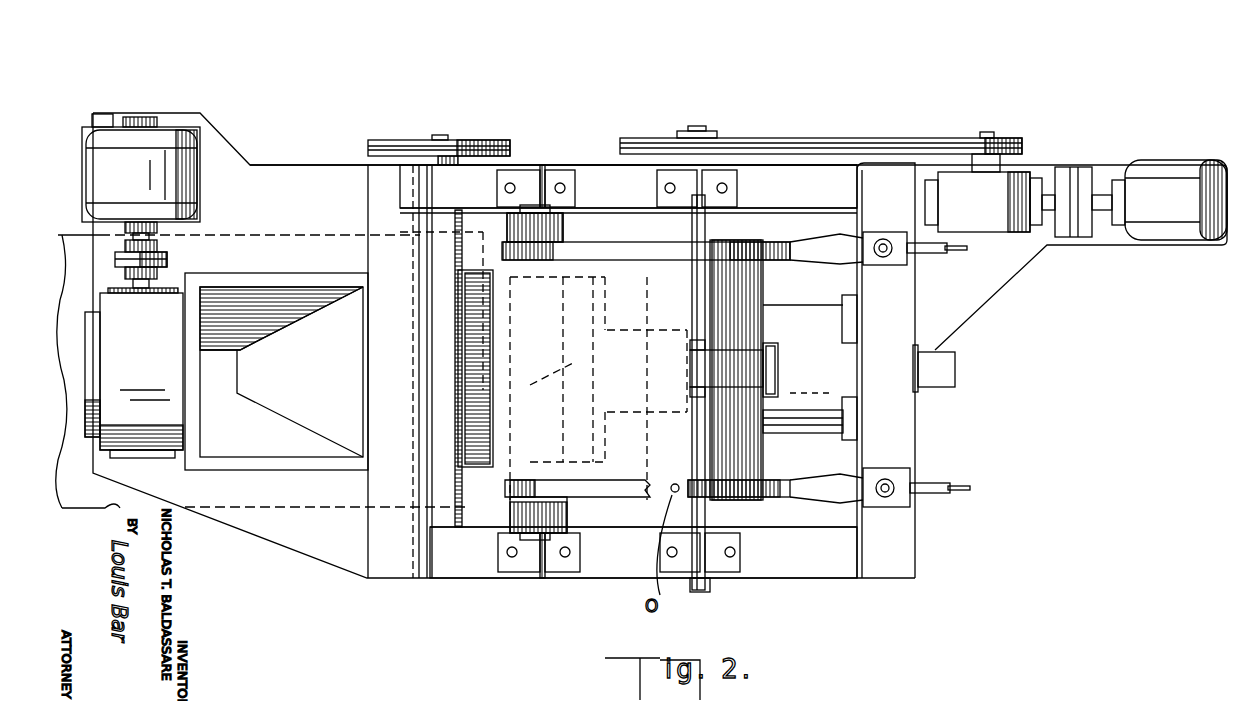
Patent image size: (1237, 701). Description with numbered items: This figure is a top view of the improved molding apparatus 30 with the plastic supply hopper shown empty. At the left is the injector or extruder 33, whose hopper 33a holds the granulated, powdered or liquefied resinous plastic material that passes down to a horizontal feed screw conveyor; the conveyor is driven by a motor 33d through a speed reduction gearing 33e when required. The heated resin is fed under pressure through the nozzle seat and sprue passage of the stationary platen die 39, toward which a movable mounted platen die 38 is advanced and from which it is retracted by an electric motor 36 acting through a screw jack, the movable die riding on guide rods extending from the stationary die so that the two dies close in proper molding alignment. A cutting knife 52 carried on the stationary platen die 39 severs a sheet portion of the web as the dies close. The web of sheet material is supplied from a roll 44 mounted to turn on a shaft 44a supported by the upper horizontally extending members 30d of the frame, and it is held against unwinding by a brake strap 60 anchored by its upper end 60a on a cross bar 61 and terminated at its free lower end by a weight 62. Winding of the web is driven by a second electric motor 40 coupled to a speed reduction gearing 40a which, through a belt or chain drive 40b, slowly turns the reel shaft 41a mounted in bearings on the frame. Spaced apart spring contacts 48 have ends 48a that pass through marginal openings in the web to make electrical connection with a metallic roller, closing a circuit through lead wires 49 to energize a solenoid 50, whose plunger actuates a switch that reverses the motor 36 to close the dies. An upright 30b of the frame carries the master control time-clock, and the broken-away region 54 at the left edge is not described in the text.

The apparatus 30 is at (1018, 70).
The upright of frame 30b is at (905, 430).
The upper horizontally extending members of frame 30d is at (766, 175).
The injector or extruder 33 is at (247, 102).
The hopper 33a is at (252, 440).
The motor 33d is at (107, 162).
The speed reduction gearing 33e is at (134, 373).
The electric motor 36 is at (797, 415).
The movable mounted platen die 38 is at (543, 366).
The stationary platen die 39 is at (437, 352).
The electric motor 40 is at (1160, 205).
The speed reduction gearing 40a is at (1000, 212).
The belt or chain drive 40b is at (815, 147).
The shaft 41a is at (693, 132).
The roll 44 is at (750, 280).
The shaft 44a is at (700, 592).
The spring contacts 48 is at (612, 250).
The ends of spring contacts 48a is at (505, 270).
The lead wires 49 is at (945, 250).
The solenoid 50 is at (945, 372).
The cutting knife 52 is at (470, 293).
The break line / conveyor 54 is at (72, 250).
The brake strap 60 is at (733, 362).
The upper end of brake strap 60a is at (690, 372).
The cross bar 61 is at (695, 283).
The weight 62 is at (775, 360).